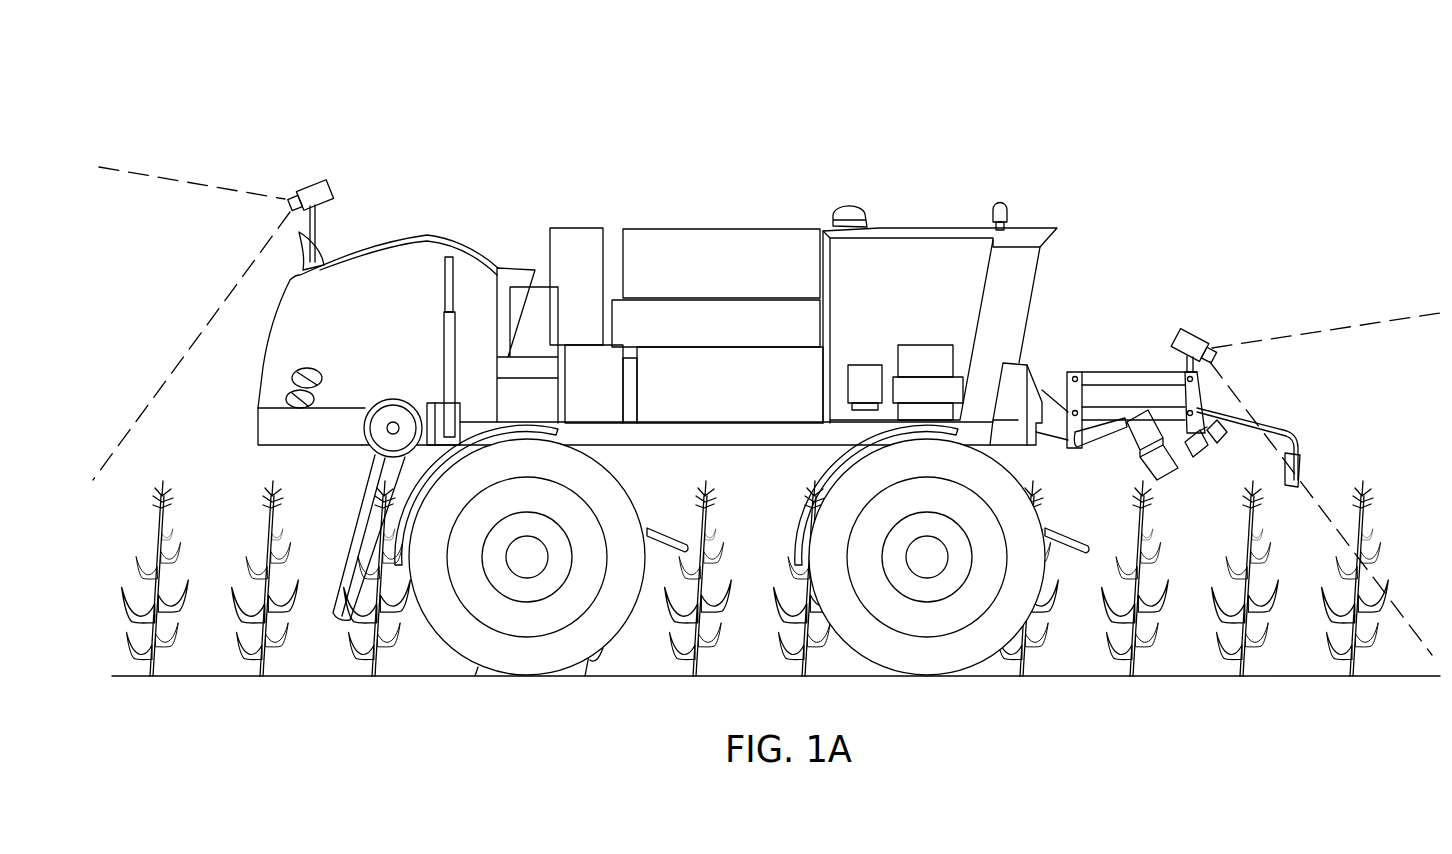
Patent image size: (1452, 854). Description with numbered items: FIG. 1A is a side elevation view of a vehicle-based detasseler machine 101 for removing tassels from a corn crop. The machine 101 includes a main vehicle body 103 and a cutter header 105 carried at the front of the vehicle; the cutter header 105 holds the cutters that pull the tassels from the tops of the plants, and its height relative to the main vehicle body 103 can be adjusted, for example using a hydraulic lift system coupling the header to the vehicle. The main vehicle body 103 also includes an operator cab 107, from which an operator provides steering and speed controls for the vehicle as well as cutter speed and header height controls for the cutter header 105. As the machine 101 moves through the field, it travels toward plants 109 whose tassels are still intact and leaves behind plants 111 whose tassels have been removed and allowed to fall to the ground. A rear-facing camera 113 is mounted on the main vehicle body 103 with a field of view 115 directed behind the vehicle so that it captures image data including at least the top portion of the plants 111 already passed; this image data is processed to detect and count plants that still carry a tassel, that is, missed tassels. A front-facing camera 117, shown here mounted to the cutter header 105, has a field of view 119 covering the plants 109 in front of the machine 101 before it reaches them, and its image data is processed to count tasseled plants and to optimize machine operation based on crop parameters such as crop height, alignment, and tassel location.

The detasseler machine 101 is at (981, 77).
The main vehicle body 103 is at (1035, 372).
The cutter header 105 is at (1137, 371).
The operator cab 107 is at (930, 230).
The plants with intact tassel 109 is at (1390, 498).
The plants with tassel removed 111 is at (172, 518).
The rear-facing camera 113 is at (310, 180).
The field of view 115 is at (183, 180).
The front-facing camera 117 is at (1182, 330).
The field of view 119 is at (1327, 325).